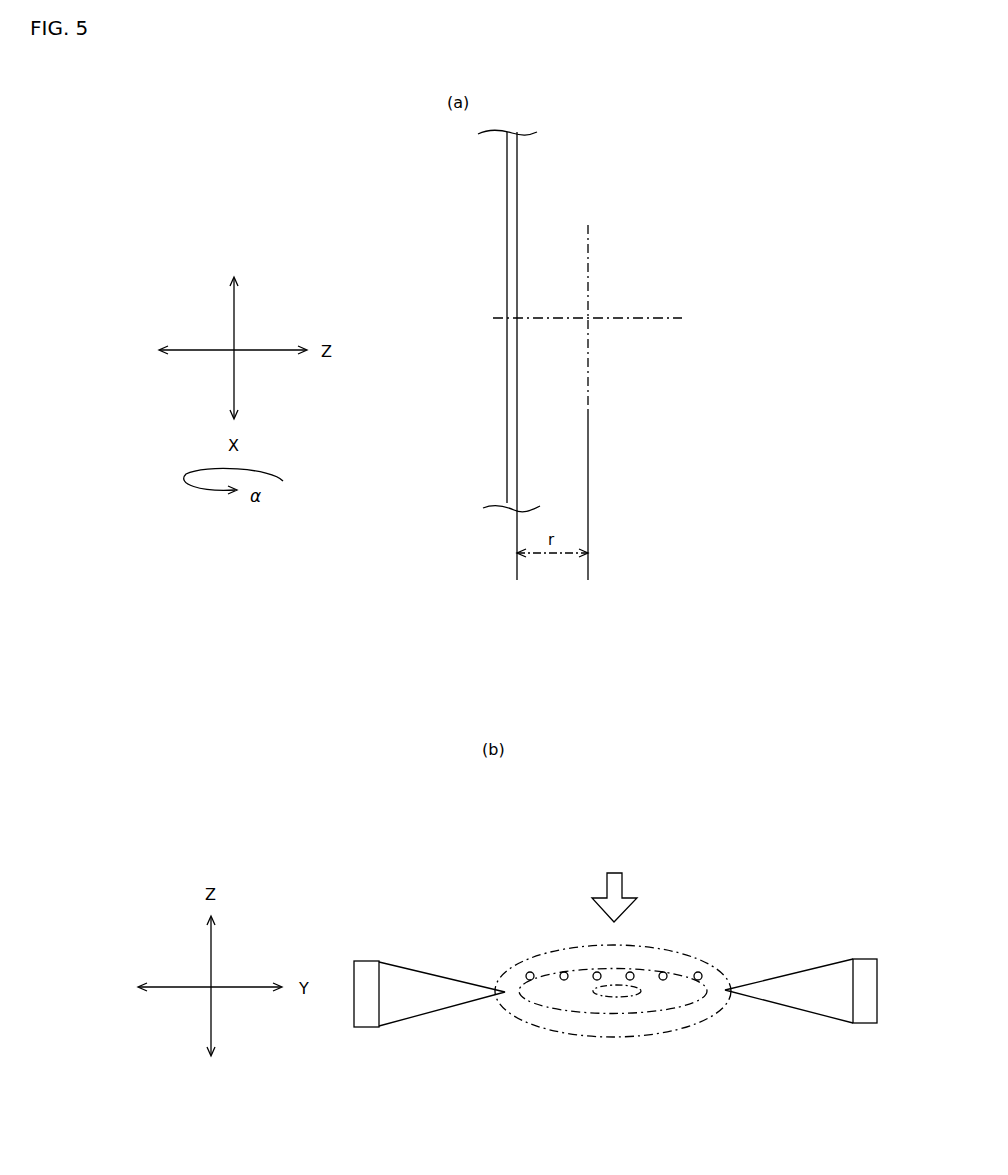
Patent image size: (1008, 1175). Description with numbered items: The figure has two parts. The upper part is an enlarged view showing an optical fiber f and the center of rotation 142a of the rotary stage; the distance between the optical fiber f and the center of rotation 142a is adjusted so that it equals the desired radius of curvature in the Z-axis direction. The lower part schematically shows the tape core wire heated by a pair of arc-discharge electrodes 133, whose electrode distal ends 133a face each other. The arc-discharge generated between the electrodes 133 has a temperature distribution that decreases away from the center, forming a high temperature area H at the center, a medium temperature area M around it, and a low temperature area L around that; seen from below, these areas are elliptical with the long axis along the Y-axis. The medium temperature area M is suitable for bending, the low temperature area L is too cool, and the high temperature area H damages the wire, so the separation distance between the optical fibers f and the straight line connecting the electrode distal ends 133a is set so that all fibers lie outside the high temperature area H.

The optical fiber f is at (514, 257).
The center of rotation 142a is at (588, 318).
The arc-discharge electrodes 133 is at (797, 983).
The electrode distal ends 133a is at (503, 996).
The low temperature area L is at (541, 1018).
The high temperature area H is at (618, 996).
The medium temperature area M is at (662, 996).